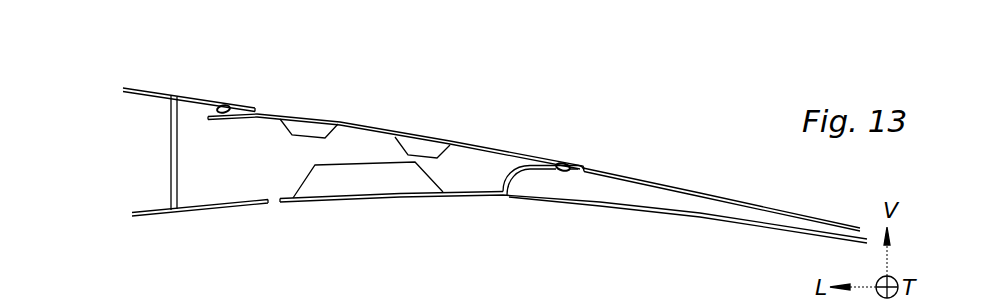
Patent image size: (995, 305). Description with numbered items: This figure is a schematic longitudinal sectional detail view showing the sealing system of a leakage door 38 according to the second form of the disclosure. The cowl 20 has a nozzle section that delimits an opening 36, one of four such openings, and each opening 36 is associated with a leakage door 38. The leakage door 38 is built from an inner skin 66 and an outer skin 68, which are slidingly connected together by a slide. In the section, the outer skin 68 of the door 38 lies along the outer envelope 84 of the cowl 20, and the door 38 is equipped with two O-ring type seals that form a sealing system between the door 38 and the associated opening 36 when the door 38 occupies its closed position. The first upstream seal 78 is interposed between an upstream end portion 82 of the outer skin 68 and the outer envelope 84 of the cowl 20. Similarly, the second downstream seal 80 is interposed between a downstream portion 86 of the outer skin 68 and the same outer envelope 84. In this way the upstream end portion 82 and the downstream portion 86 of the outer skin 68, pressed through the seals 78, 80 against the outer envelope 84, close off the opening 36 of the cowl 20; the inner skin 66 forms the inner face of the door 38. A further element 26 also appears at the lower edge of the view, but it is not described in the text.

The cowl 20 is at (307, 77).
The trailing edge 26 is at (580, 255).
The opening 36 is at (443, 118).
The leakage door 38 is at (417, 107).
The inner skin 66 is at (393, 199).
The outer skin 68 is at (485, 147).
The first upstream seal 78 is at (224, 105).
The second downstream seal 80 is at (560, 163).
The upstream end portion 82 is at (249, 105).
The outer envelope 84 is at (190, 96).
The downstream portion 86 is at (582, 165).